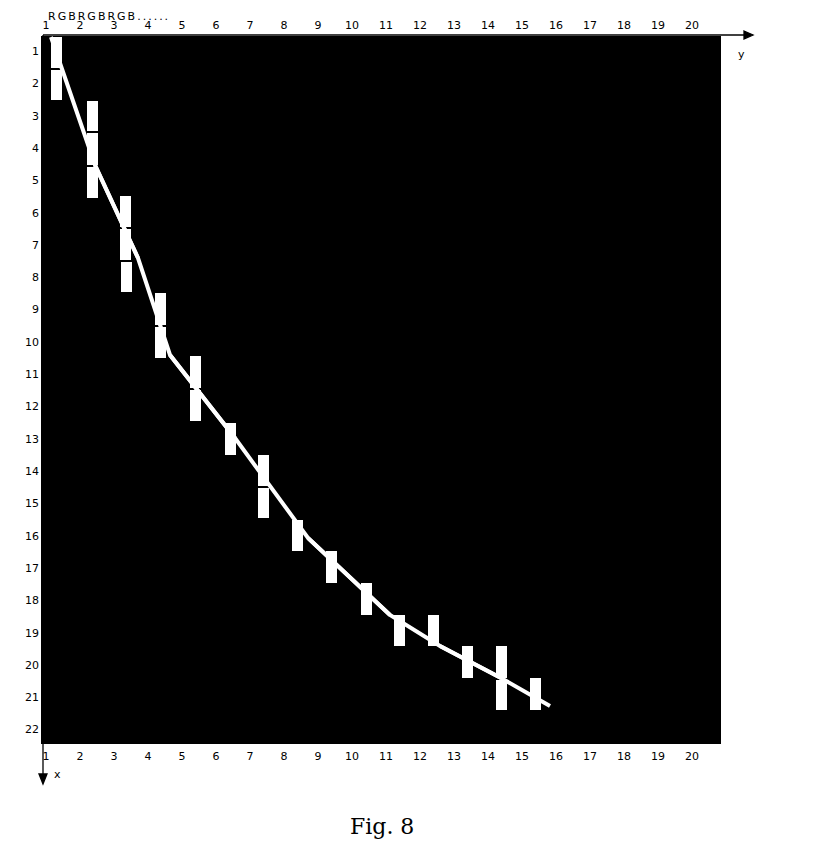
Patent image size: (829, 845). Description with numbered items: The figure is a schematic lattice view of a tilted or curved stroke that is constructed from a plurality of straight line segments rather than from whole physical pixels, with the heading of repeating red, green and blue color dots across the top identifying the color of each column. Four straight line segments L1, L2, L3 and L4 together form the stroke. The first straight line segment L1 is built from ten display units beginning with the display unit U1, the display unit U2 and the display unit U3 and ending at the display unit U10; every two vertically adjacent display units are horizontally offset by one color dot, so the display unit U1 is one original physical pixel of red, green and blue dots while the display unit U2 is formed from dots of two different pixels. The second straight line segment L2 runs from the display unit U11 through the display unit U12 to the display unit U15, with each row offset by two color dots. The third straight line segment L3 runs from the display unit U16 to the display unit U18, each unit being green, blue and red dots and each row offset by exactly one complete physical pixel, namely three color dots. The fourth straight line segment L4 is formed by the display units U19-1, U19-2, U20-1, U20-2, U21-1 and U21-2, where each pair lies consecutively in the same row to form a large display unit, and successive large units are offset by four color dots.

The display unit U1 is at (70, 46).
The display unit U2 is at (84, 77).
The display unit U3 is at (94, 108).
The straight line segment L1 is at (95, 183).
The display unit U10 is at (172, 312).
The display unit U11 is at (195, 347).
The display unit U12 is at (214, 378).
The straight line segment L2 is at (221, 448).
The display unit U15 is at (284, 472).
The display unit U16 is at (318, 503).
The display unit U18 is at (370, 570).
The display unit U19-1 is at (404, 603).
The display unit U19-2 is at (448, 603).
The display unit U20-1 is at (459, 637).
The display unit U20-2 is at (498, 637).
The display unit U21-1 is at (506, 667).
The display unit U21-2 is at (541, 667).
The straight line segment L3 is at (340, 565).
The straight line segment L4 is at (462, 668).